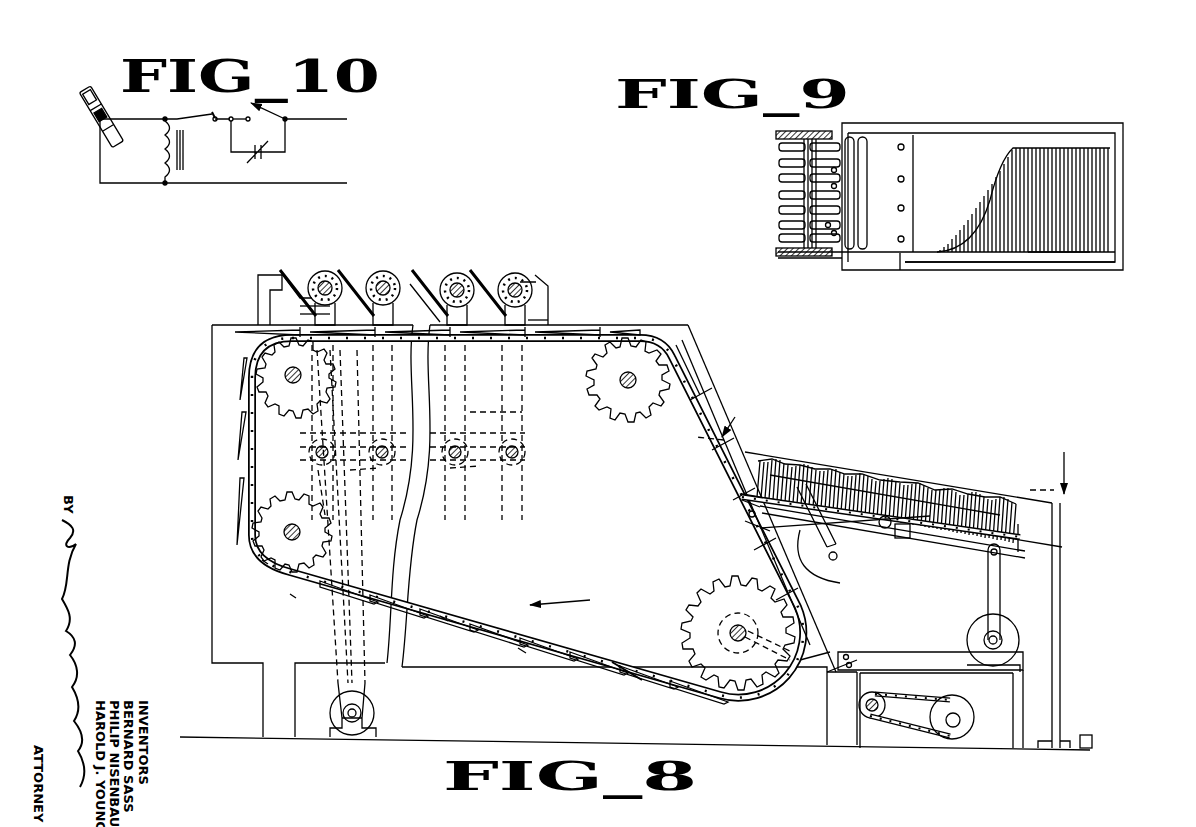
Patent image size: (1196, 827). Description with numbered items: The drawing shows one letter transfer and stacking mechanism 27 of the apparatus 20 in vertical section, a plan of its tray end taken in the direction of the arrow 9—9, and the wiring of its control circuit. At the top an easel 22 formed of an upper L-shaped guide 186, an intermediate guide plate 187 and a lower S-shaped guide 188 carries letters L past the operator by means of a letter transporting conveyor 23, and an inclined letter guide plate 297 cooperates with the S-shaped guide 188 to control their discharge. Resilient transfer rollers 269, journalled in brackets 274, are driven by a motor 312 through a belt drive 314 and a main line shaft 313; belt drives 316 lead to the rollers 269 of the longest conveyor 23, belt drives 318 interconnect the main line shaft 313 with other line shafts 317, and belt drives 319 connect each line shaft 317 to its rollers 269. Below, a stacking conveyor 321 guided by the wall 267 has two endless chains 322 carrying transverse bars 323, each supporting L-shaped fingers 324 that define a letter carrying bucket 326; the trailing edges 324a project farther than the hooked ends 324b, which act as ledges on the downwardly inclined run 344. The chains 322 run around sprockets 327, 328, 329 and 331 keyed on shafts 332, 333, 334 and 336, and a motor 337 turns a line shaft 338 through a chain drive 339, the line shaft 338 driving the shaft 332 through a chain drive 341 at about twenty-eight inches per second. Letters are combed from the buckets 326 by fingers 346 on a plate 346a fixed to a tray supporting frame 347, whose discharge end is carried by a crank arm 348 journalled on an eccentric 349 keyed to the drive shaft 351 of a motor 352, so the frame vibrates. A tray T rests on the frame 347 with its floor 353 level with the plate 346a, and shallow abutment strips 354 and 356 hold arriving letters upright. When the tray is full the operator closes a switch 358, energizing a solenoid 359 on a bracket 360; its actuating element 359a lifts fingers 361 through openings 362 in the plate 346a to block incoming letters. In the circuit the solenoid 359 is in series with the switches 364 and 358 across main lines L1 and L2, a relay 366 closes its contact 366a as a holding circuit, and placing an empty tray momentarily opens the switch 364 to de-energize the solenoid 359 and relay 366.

In FIG. 8, the apparatus 20 is at (178, 293).
In FIG. 8, the easel 22 is at (287, 266).
In FIG. 8, the letter transporting conveyor 23 is at (312, 283).
In FIG. 8, the letter transfer and stacking mechanism 27 is at (699, 341).
In FIG. 8, the upper L-shaped guide 186 is at (286, 276).
In FIG. 8, the intermediate guide plate 187 is at (300, 308).
In FIG. 8, the lower S-shaped guide 188 is at (302, 314).
In FIG. 8, the brackets 274 is at (258, 284).
In FIG. 8, the resilient transfer roller 269 is at (414, 283).
In FIG. 8, the letter guide plate 297 is at (530, 322).
In FIG. 8, the wall 267 is at (600, 537).
In FIG. 8, the motor 312 is at (378, 714).
In FIG. 8, the main line shaft 313 is at (316, 453).
In FIG. 8, the belt drive 314 is at (328, 512).
In FIG. 8, the belt drives 316 is at (308, 433).
In FIG. 8, the line shafts 317 is at (378, 460).
In FIG. 8, the belt drives 318 is at (354, 466).
In FIG. 8, the belt drives 319 is at (312, 448).
In FIG. 8, the stacking conveyor 321 is at (701, 381).
In FIG. 8, the endless chains 322 is at (618, 662).
In FIG. 9, the endless chains 322 is at (777, 132).
In FIG. 9, the bars 323 is at (800, 145).
In FIG. 8, the L-shaped strips or fingers 324 is at (250, 512).
In FIG. 9, the L-shaped strips or fingers 324 is at (784, 181).
In FIG. 8, the trailing edges 324a is at (290, 596).
In FIG. 8, the hooked ends 324b is at (262, 562).
In FIG. 8, the letter carrying bucket 326 is at (244, 412).
In FIG. 9, the letter carrying bucket 326 is at (788, 198).
In FIG. 8, the sprocket 327 is at (758, 610).
In FIG. 8, the sprocket 328 is at (335, 533).
In FIG. 8, the sprocket 329 is at (260, 400).
In FIG. 8, the sprocket 331 is at (587, 373).
In FIG. 8, the shaft 332 is at (742, 637).
In FIG. 8, the shaft 333 is at (288, 532).
In FIG. 8, the shaft 334 is at (288, 374).
In FIG. 8, the shaft 336 is at (618, 380).
In FIG. 8, the motor 337 is at (960, 698).
In FIG. 8, the line shaft 338 is at (910, 733).
In FIG. 8, the chain drive 339 is at (905, 692).
In FIG. 8, the chain drive 341 is at (822, 692).
In FIG. 8, the downwardly inclined run 344 is at (702, 432).
In FIG. 8, the fingers 346 is at (750, 514).
In FIG. 9, the fingers 346 is at (836, 186).
In FIG. 8, the plate 346a is at (812, 492).
In FIG. 9, the plate 346a is at (901, 256).
In FIG. 8, the tray supporting frame 347 is at (962, 547).
In FIG. 9, the tray supporting frame 347 is at (1000, 266).
In FIG. 8, the crank arm 348 is at (1018, 580).
In FIG. 8, the eccentric 349 is at (989, 643).
In FIG. 8, the drive shaft 351 is at (986, 636).
In FIG. 8, the motor 352 is at (1000, 623).
In FIG. 8, the floor 353 is at (958, 502).
In FIG. 9, the floor 353 is at (993, 150).
In FIG. 8, the abutment strip 354 is at (745, 501).
In FIG. 9, the abutment strip 354 is at (850, 253).
In FIG. 8, the abutment strip 356 is at (755, 524).
In FIG. 9, the abutment strip 356 is at (862, 252).
In FIG. 8, the switch 358 is at (1086, 735).
In FIG. 10, the switch 358 is at (279, 111).
In FIG. 8, the solenoid 359 is at (824, 553).
In FIG. 10, the solenoid 359 is at (100, 141).
In FIG. 8, the actuating element 359a is at (833, 554).
In FIG. 10, the actuating element 359a is at (95, 112).
In FIG. 8, the bracket 360 is at (808, 562).
In FIG. 8, the fingers 361 is at (762, 529).
In FIG. 9, the fingers 361 is at (906, 180).
In FIG. 10, the fingers 361 is at (96, 90).
In FIG. 9, the openings 362 is at (906, 147).
In FIG. 8, the switch 364 is at (906, 540).
In FIG. 10, the switch 364 is at (200, 117).
In FIG. 10, the relay 366 is at (166, 150).
In FIG. 10, the relay contact 366a is at (257, 153).
In FIG. 8, the viewing direction arrow 9 is at (880, 444).
In FIG. 8, the letters L is at (912, 482).
In FIG. 9, the letters L is at (1088, 255).
In FIG. 8, the tray T is at (912, 526).
In FIG. 9, the tray T is at (1063, 141).
In FIG. 10, the main line L1 is at (322, 124).
In FIG. 10, the main line L2 is at (316, 190).